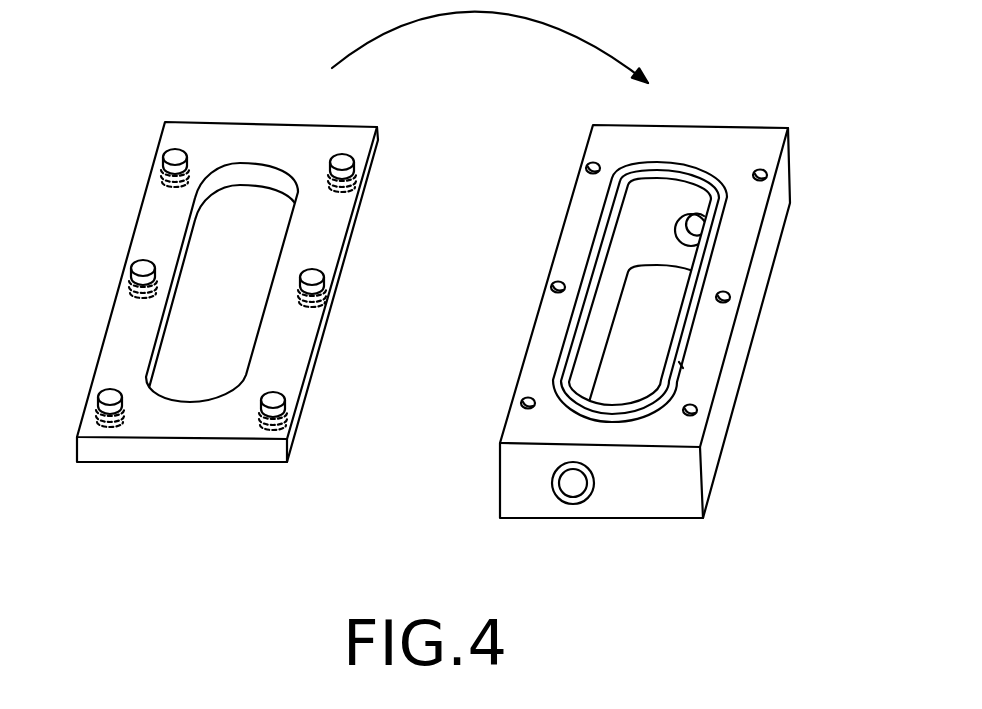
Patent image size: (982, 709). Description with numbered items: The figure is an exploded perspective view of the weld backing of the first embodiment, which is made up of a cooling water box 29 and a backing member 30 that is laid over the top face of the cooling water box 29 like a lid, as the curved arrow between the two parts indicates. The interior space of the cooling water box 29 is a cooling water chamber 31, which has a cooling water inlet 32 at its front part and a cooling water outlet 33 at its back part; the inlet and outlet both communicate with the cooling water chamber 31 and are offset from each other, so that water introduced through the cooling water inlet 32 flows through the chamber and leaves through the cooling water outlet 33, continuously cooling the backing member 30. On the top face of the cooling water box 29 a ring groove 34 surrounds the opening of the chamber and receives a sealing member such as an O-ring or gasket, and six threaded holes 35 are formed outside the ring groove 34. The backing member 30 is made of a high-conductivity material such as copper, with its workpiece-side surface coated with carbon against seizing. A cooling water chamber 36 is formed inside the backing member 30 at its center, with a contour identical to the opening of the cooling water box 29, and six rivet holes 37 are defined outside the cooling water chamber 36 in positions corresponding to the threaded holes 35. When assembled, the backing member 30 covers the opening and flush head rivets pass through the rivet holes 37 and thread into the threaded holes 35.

The cooling water box 29 is at (670, 315).
The backing member 30 is at (252, 247).
The cooling water chamber 31 is at (667, 187).
The cooling water inlet 32 is at (580, 492).
The cooling water outlet 33 is at (700, 213).
The ring groove 34 is at (680, 365).
The threaded holes 35 is at (588, 169).
The cooling water chamber 36 is at (240, 197).
The rivet holes 37 is at (170, 153).